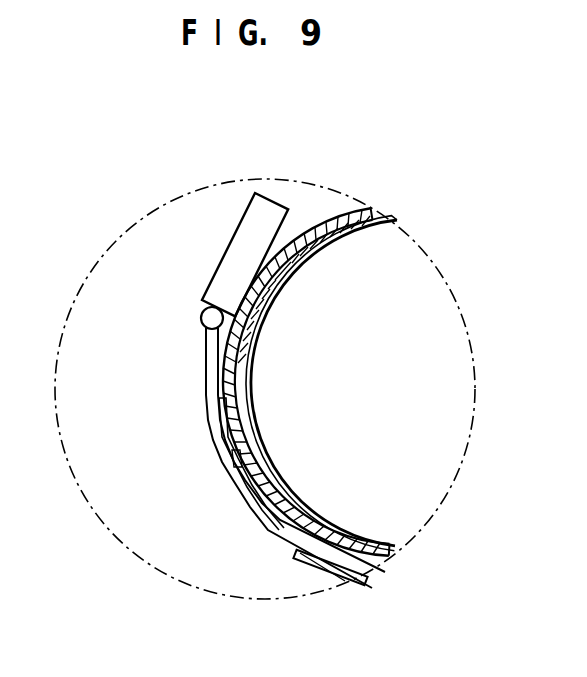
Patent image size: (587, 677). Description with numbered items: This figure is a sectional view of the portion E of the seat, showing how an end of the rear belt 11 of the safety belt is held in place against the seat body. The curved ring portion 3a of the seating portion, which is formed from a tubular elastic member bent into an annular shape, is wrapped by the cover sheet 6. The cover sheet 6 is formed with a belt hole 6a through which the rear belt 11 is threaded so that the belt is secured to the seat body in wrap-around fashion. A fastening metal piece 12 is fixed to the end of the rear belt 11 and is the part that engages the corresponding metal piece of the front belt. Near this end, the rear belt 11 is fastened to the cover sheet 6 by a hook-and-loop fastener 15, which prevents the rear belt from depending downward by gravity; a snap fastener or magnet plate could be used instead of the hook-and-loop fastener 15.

The portion E is at (135, 555).
The ring portion 3a is at (276, 473).
The cover sheet 6 is at (321, 221).
The belt hole 6a is at (318, 569).
The rear belt 11 is at (208, 360).
The fastening metal piece 12 is at (232, 265).
The hook-and-loop fastener 15 is at (221, 440).